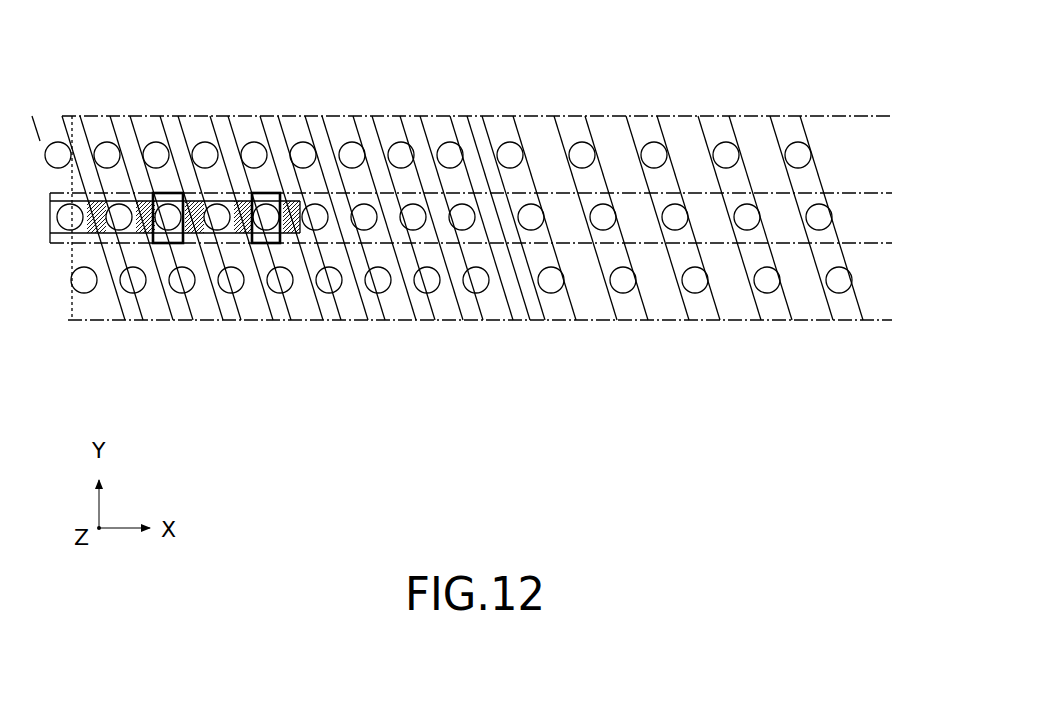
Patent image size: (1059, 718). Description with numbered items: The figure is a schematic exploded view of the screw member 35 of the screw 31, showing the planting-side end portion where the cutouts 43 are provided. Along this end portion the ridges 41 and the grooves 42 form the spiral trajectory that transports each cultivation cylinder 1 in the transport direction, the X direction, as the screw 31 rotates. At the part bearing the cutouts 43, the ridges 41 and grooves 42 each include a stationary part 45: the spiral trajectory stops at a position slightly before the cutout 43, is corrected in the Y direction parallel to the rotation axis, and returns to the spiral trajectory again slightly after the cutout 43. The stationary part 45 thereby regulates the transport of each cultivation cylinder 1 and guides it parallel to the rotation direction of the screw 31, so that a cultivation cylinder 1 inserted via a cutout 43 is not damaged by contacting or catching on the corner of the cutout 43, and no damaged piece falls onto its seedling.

The cultivation cylinder 1 is at (93, 303).
The screw 31 is at (458, 73).
The screw member 35 is at (471, 218).
The ridge 41 is at (118, 113).
The groove 42 is at (140, 308).
The cutout 43 is at (198, 228).
The stationary part 45 is at (172, 113).